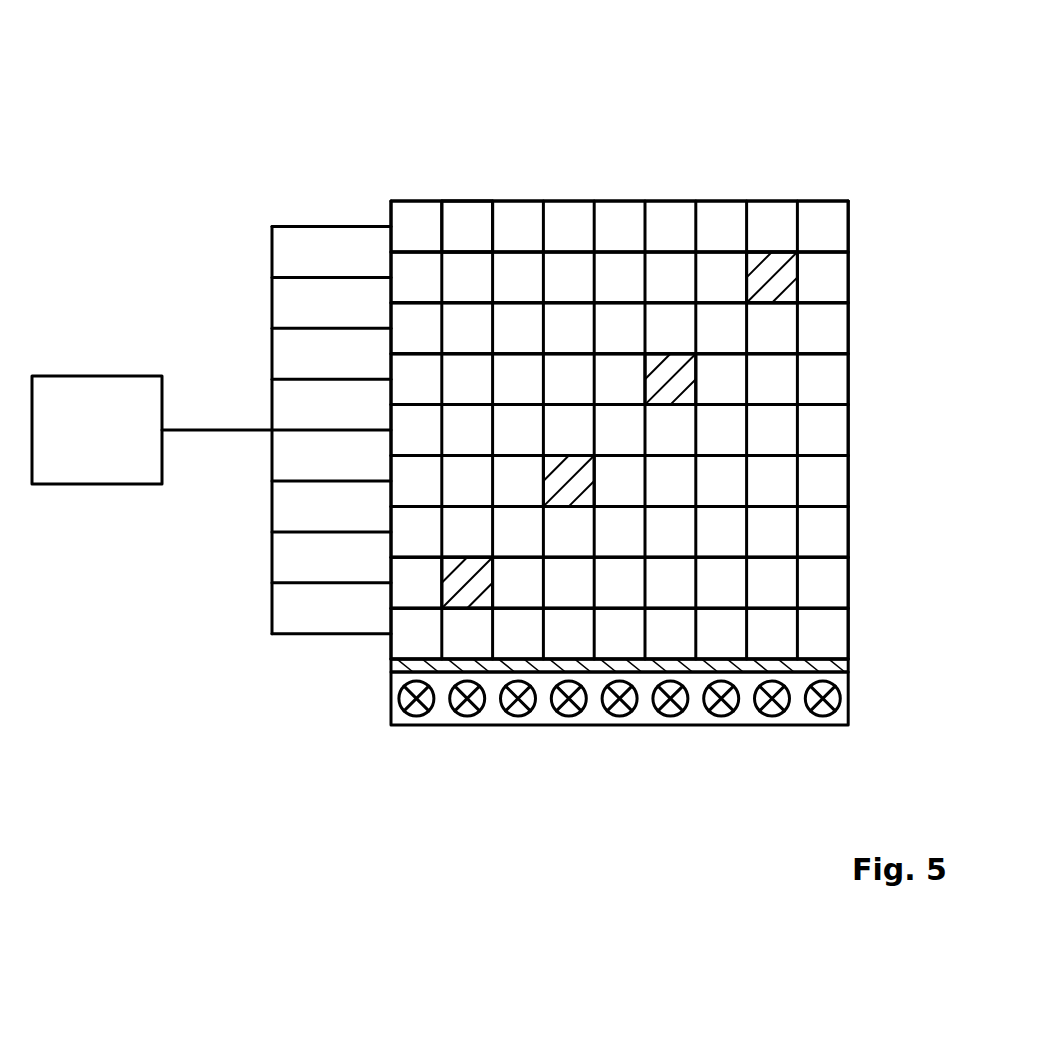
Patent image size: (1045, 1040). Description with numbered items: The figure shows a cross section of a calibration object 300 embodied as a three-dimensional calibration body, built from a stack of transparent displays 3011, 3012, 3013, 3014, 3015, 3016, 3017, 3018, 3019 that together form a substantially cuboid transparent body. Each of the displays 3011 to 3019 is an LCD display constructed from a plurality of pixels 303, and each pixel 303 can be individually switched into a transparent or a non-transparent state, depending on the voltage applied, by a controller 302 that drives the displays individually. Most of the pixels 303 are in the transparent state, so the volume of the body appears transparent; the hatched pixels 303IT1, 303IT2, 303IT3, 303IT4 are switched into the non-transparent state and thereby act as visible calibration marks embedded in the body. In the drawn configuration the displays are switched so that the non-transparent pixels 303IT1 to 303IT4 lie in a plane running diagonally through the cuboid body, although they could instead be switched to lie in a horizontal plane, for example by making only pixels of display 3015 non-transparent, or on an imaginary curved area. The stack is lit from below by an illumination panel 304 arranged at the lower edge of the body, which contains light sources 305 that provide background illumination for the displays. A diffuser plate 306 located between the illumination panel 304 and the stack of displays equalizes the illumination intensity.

The calibration object 300 is at (603, 72).
The transparent display 3011 is at (835, 226).
The transparent display 3012 is at (835, 277).
The transparent display 3013 is at (835, 328).
The transparent display 3014 is at (835, 379).
The transparent display 3015 is at (835, 430).
The transparent display 3016 is at (835, 481).
The transparent display 3017 is at (835, 532).
The transparent display 3018 is at (835, 583).
The transparent display 3019 is at (835, 634).
The controller 302 is at (94, 375).
The pixel 303 is at (472, 215).
The non-transparent pixel 303IT1 is at (778, 256).
The non-transparent pixel 303IT2 is at (690, 356).
The non-transparent pixel 303IT3 is at (583, 457).
The non-transparent pixel 303IT4 is at (451, 594).
The illumination panel 304 is at (491, 718).
The light source 305 is at (414, 720).
The diffuser plate 306 is at (849, 667).